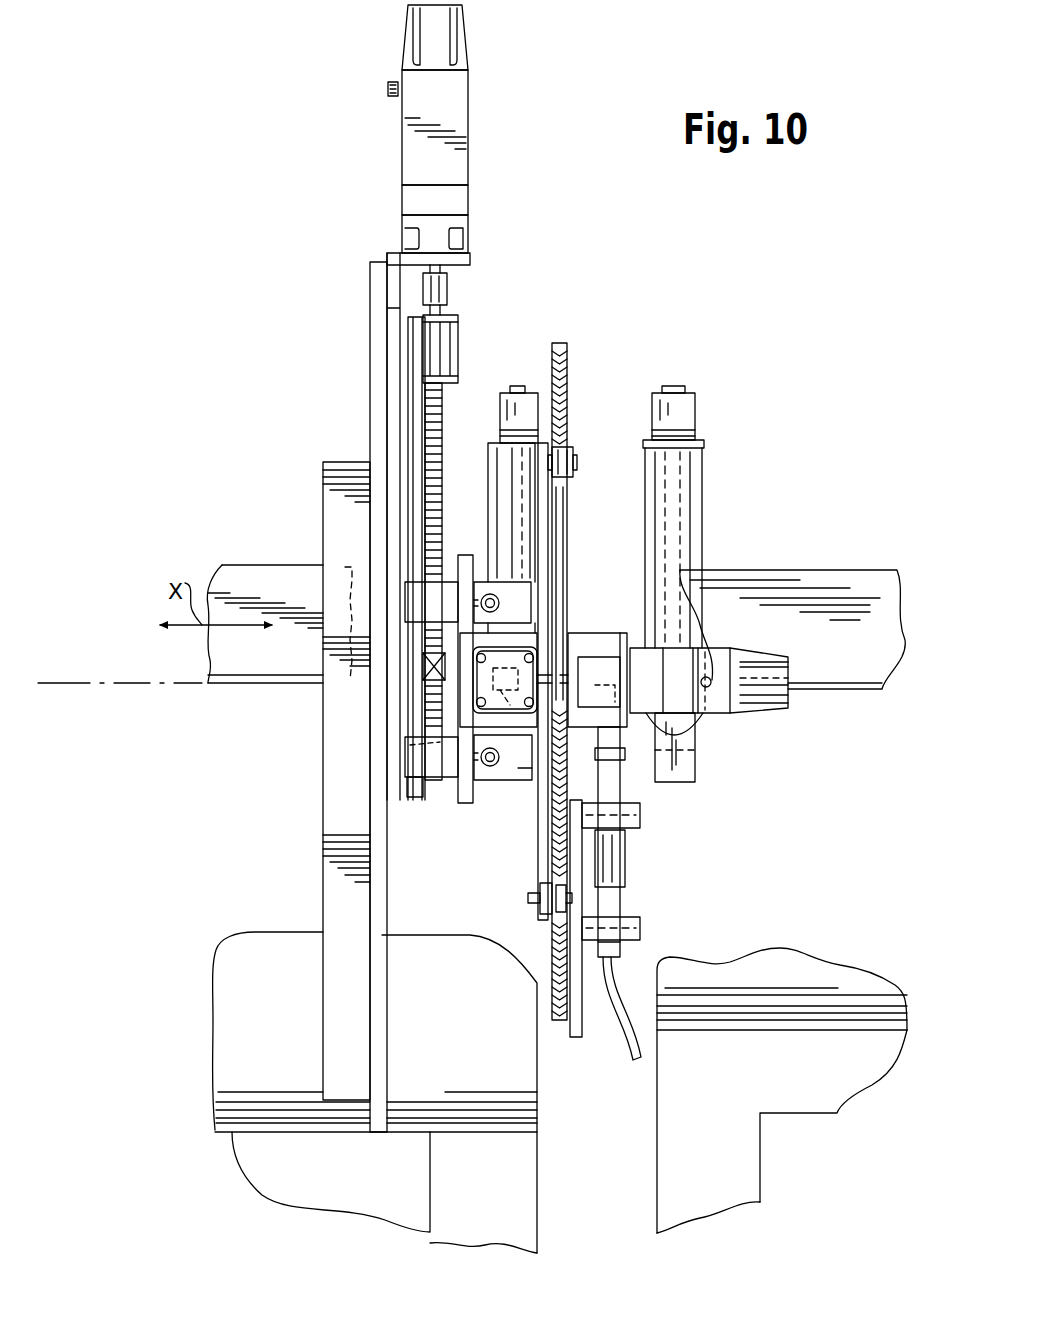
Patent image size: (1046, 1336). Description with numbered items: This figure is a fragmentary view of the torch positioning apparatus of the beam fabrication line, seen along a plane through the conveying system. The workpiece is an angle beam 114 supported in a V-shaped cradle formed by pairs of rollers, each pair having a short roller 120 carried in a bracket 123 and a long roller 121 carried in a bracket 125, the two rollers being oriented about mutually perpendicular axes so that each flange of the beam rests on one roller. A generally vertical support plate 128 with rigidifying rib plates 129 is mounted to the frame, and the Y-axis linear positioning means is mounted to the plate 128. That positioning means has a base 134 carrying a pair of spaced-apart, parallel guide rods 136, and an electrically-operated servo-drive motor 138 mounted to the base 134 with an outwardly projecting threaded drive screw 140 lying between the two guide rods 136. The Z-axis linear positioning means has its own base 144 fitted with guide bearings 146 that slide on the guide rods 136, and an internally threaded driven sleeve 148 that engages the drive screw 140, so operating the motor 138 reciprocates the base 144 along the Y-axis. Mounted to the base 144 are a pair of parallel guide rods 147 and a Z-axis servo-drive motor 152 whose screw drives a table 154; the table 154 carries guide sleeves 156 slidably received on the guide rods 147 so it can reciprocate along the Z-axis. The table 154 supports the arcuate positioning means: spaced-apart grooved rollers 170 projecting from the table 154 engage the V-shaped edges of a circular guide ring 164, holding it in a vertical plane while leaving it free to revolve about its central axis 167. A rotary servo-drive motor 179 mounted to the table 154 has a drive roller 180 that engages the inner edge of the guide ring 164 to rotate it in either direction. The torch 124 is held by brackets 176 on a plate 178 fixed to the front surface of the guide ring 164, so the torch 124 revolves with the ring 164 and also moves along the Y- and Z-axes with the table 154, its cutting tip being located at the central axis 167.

The angle beam 114 is at (238, 564).
The short roller 120 is at (707, 730).
The long roller 121 is at (522, 510).
The bracket 123 is at (690, 772).
The torch 124 is at (518, 768).
The bracket 125 is at (525, 413).
The support plate 128 is at (370, 330).
The rigidifying rib plate 129 is at (323, 492).
The base 134 is at (396, 362).
The guide rod 136 is at (435, 792).
The servo-drive motor 138 is at (465, 113).
The drive screw 140 is at (440, 405).
The base 144 is at (462, 800).
The guide bearing 146 is at (407, 593).
The guide rod 147 is at (505, 602).
The driven sleeve 148 is at (423, 700).
The servo-drive motor 152 is at (524, 645).
The table 154 is at (536, 858).
The guide sleeve 156 is at (526, 598).
The guide ring 164 is at (566, 345).
The central axis 167 is at (128, 685).
The roller 170 is at (569, 460).
The bracket 176 is at (626, 850).
The plate 178 is at (577, 1038).
The rotary servo-drive motor 179 is at (756, 710).
The drive roller 180 is at (549, 656).